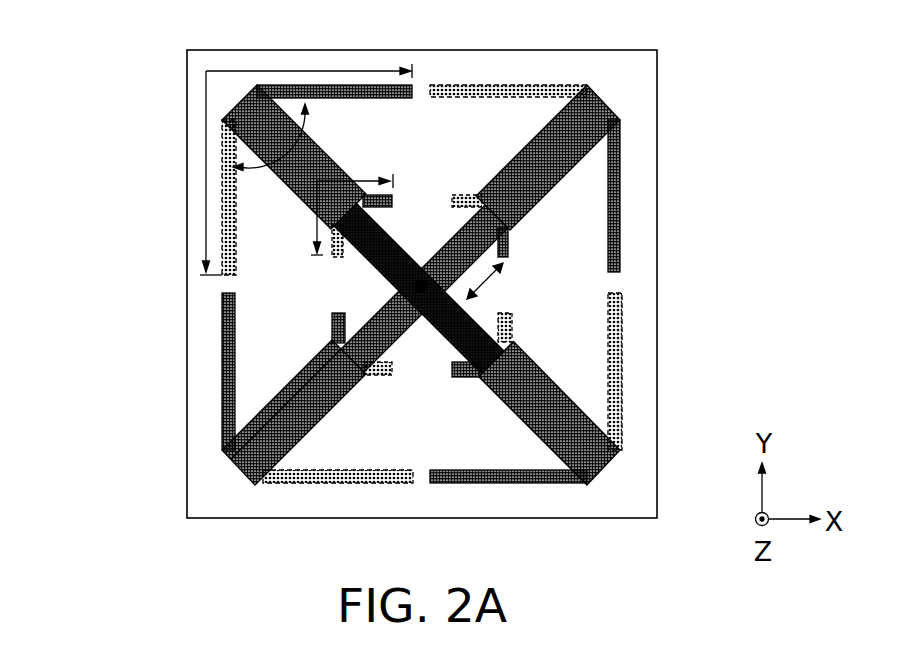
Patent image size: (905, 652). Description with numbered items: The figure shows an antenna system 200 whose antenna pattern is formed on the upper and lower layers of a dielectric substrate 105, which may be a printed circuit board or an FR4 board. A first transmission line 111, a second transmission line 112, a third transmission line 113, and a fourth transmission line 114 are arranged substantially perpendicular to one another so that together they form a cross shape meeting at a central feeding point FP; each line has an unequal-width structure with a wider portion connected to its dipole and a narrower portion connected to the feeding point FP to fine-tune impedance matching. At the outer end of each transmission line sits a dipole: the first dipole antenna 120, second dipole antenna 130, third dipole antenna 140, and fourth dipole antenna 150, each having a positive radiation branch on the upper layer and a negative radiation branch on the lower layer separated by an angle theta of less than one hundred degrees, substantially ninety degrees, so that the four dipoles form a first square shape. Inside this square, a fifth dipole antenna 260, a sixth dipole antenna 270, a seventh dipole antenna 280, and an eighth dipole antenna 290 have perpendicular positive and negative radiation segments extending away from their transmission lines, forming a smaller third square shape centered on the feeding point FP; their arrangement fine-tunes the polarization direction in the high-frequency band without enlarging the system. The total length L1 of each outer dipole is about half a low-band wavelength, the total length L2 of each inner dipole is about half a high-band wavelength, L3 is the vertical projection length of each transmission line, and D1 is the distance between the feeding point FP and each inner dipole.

The antenna system 200 is at (88, 45).
The dielectric substrate 105 is at (658, 58).
The first transmission line 111 is at (260, 92).
The second transmission line 112 is at (612, 97).
The third transmission line 113 is at (466, 333).
The fourth transmission line 114 is at (403, 303).
The first dipole antenna 120 is at (333, 90).
The second dipole antenna 130 is at (509, 90).
The third dipole antenna 140 is at (618, 372).
The fourth dipole antenna 150 is at (230, 368).
The fifth dipole antenna 260 is at (393, 201).
The sixth dipole antenna 270 is at (466, 195).
The seventh dipole antenna 280 is at (513, 328).
The eighth dipole antenna 290 is at (332, 328).
The feeding point FP is at (422, 293).
The total length of each outer dipole antenna L1 is at (206, 138).
The total length of each inner dipole antenna L2 is at (317, 225).
The total length of the vertical projection of each transmission line L3 is at (273, 393).
The distance between the feeding point and each inner dipole antenna D1 is at (500, 288).
The angle between the positive radiation branch and the negative radiation branch theta is at (271, 140).